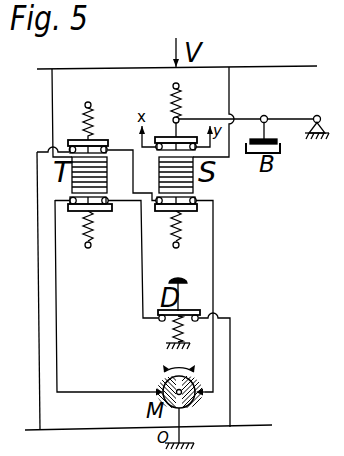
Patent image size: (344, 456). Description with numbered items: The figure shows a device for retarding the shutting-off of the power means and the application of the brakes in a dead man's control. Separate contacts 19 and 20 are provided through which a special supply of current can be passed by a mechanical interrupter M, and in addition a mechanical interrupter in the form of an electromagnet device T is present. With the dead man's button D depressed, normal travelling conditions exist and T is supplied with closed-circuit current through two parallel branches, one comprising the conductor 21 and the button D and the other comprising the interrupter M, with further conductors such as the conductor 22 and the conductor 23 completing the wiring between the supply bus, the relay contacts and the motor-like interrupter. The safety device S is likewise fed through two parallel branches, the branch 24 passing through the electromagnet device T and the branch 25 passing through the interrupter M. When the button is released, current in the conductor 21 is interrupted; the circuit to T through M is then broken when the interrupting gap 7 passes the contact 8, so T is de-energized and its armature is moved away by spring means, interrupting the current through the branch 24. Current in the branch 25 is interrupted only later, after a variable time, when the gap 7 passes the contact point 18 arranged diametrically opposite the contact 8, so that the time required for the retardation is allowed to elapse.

The interrupting gap 7 is at (179, 358).
The contact 8 is at (160, 387).
The contact point 18 is at (199, 392).
The contact 19 is at (196, 211).
The contact 20 is at (159, 211).
The conductor 21 is at (141, 270).
The conductor 22 is at (58, 299).
The conductor from supply bus to relay T contact 23 is at (37, 283).
The branch 24 is at (138, 168).
The branch 25 is at (213, 264).